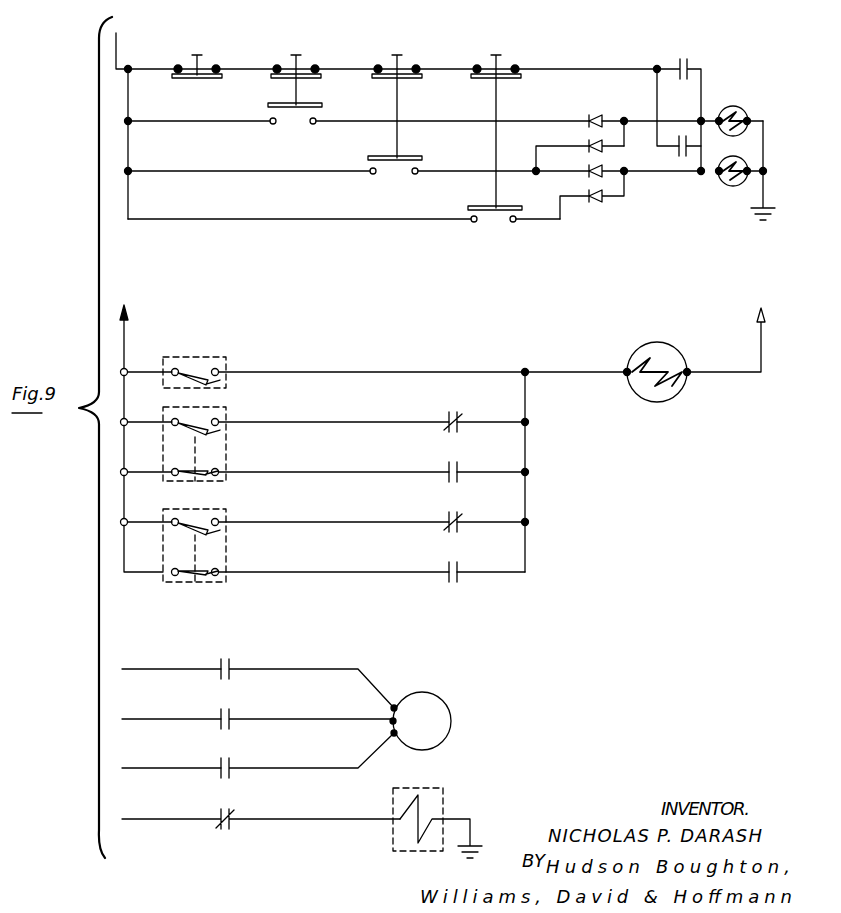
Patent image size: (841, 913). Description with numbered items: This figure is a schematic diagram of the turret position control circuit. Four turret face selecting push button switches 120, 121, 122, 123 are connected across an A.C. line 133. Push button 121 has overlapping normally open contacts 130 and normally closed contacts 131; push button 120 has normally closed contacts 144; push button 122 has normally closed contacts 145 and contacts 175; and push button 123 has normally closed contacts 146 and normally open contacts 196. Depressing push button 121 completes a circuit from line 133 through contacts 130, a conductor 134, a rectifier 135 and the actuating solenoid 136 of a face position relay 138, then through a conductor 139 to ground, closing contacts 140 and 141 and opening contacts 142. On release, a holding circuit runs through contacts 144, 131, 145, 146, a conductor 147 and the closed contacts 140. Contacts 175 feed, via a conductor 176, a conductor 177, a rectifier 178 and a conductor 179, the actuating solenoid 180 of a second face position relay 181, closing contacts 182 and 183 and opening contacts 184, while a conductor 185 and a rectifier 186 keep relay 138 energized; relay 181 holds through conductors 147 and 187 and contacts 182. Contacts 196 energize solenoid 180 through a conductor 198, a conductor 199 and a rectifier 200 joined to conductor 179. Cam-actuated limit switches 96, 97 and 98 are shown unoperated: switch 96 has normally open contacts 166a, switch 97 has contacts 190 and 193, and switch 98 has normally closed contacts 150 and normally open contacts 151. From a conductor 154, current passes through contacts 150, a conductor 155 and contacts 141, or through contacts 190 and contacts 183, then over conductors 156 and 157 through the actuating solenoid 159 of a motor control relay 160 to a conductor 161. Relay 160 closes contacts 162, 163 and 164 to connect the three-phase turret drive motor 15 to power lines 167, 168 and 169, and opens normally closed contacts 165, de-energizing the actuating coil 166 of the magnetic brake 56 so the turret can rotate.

The turret drive motor 15 is at (440, 698).
The magnetic brake 56 is at (445, 806).
The limit switch 96 is at (227, 362).
The limit switch 97 is at (226, 466).
The limit switch 98 is at (226, 566).
The push button switch 120 is at (197, 54).
The push button switch 121 is at (297, 54).
The push button switch 122 is at (398, 54).
The push button switch 123 is at (497, 54).
The normally open contacts 130 is at (291, 125).
The normally closed contacts 131 is at (313, 64).
The A.C. line 133 is at (118, 52).
The conductor 134 is at (420, 120).
The rectifier 135 is at (595, 114).
The actuating solenoid 136 is at (730, 106).
The face position relay 138 is at (748, 110).
The conductor 139 is at (766, 142).
The normally open contacts 140 is at (685, 56).
The normally open contacts 141 is at (455, 570).
The normally closed contacts 142 is at (455, 520).
The normally closed contacts 144 is at (214, 64).
The normally closed contacts 145 is at (416, 64).
The normally closed contacts 146 is at (515, 64).
The conductor 147 is at (606, 68).
The normally closed contacts 150 is at (190, 582).
The normally open contacts 151 is at (198, 518).
The conductor 154 is at (128, 330).
The conductor 155 is at (330, 578).
The conductor 156 is at (527, 496).
The conductor 157 is at (552, 372).
The actuating solenoid 159 is at (640, 392).
The motor control relay 160 is at (680, 350).
The conductor 161 is at (761, 342).
The normally open contacts 162 is at (232, 662).
The normally open contacts 163 is at (232, 712).
The normally open contacts 164 is at (232, 762).
The normally closed contacts 165 is at (228, 832).
The actuating coil 166 is at (424, 800).
The normally open contacts 166a is at (196, 372).
The power line 167 is at (130, 668).
The power line 168 is at (130, 718).
The power line 169 is at (130, 767).
The contacts 175 is at (384, 174).
The conductor 176 is at (195, 170).
The conductor 177 is at (432, 170).
The rectifier 178 is at (600, 166).
The conductor 179 is at (645, 173).
The actuating solenoid 180 is at (726, 186).
The face position relay 181 is at (742, 190).
The normally open contacts 182 is at (683, 140).
The normally open contacts 183 is at (455, 470).
The normally closed contacts 184 is at (455, 420).
The conductor 185 is at (568, 145).
The rectifier 186 is at (590, 148).
The conductor 187 is at (657, 104).
The contacts 190 is at (180, 477).
The contacts 193 is at (204, 421).
The normally open contacts 196 is at (492, 223).
The conductor 198 is at (272, 222).
The conductor 199 is at (540, 222).
The rectifier 200 is at (598, 205).